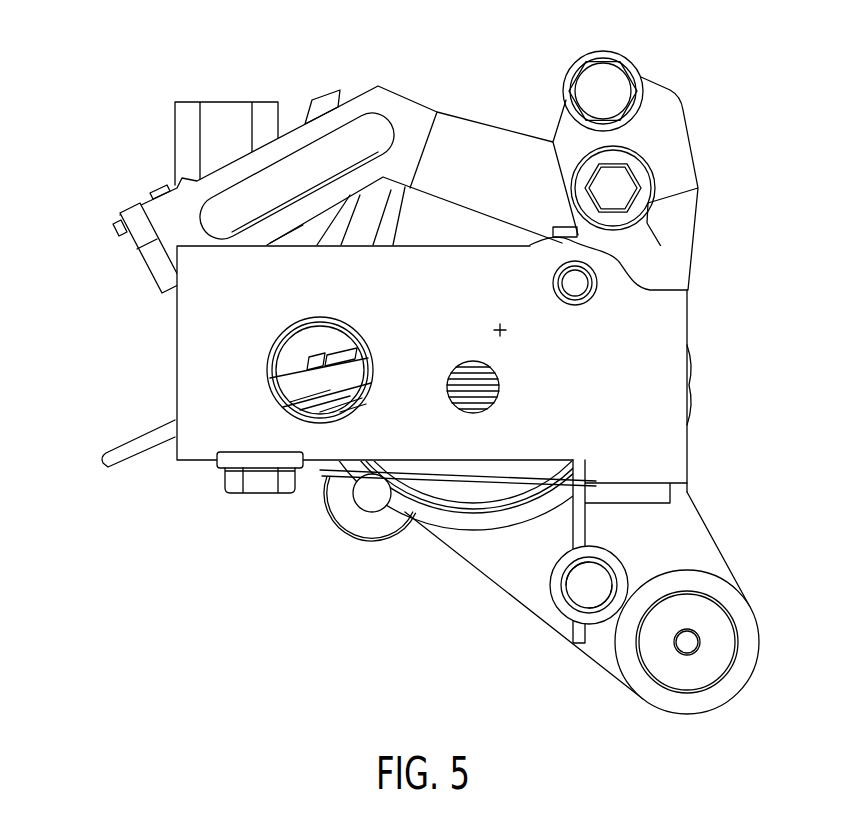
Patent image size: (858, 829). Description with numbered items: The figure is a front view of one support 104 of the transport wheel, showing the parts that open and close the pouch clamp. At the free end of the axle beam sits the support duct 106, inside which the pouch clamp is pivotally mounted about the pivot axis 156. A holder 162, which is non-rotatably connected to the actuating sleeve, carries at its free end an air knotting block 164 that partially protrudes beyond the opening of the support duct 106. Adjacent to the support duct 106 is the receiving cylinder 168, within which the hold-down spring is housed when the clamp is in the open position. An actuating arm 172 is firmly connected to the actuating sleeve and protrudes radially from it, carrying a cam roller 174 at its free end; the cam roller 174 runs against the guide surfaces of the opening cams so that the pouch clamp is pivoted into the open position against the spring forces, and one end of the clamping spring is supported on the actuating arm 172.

The support 104 is at (790, 195).
The support duct 106 is at (164, 350).
The pivot axis 156 is at (594, 282).
The holder 162 is at (408, 108).
The air knotting block 164 is at (120, 235).
The receiving cylinder 168 is at (190, 131).
The actuating arm 172 is at (690, 523).
The cam roller 174 is at (751, 653).